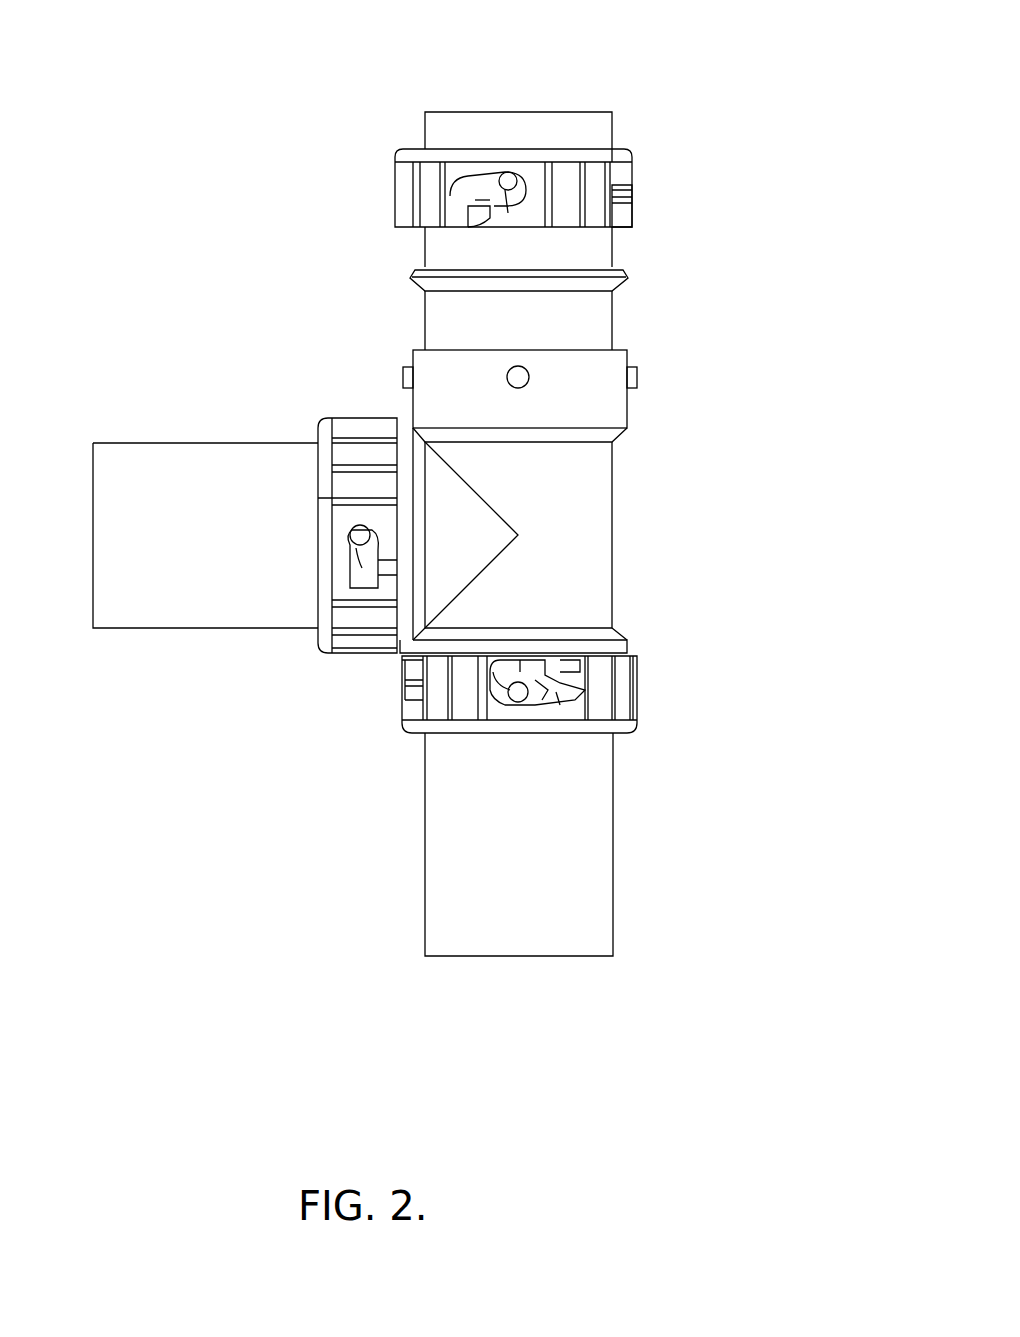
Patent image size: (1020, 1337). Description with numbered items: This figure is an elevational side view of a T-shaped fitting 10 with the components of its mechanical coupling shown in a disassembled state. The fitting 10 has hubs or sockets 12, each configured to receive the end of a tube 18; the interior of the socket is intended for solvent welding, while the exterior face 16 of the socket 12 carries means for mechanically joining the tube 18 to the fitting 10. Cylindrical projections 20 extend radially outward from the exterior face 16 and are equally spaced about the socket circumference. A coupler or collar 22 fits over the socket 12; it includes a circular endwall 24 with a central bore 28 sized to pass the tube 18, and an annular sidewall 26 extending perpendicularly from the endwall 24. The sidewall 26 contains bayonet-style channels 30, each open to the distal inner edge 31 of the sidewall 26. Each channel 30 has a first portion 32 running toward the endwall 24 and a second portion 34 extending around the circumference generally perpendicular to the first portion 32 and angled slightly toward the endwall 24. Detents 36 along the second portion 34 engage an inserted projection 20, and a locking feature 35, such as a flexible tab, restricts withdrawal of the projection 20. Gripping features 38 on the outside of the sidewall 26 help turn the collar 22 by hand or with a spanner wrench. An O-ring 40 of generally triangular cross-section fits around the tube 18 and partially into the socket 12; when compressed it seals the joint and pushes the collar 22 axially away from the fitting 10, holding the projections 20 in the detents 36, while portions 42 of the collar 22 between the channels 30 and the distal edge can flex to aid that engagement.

The fitting 10 is at (612, 500).
The socket 12 is at (625, 347).
The exterior face 16 is at (480, 402).
The tube 18 is at (497, 125).
The projection 20 is at (403, 375).
The collar 22 is at (572, 150).
The endwall 24 is at (408, 150).
The sidewall 26 is at (412, 188).
The central bore 28 is at (464, 136).
The channel 30 is at (524, 193).
The inner edge 31 is at (625, 226).
The first portion 32 is at (455, 216).
The second portion 34 is at (508, 172).
The locking feature 35 is at (540, 690).
The detent 36 is at (505, 213).
The gripping feature 38 is at (587, 178).
The O-ring 40 is at (432, 270).
The portion 42 is at (490, 218).